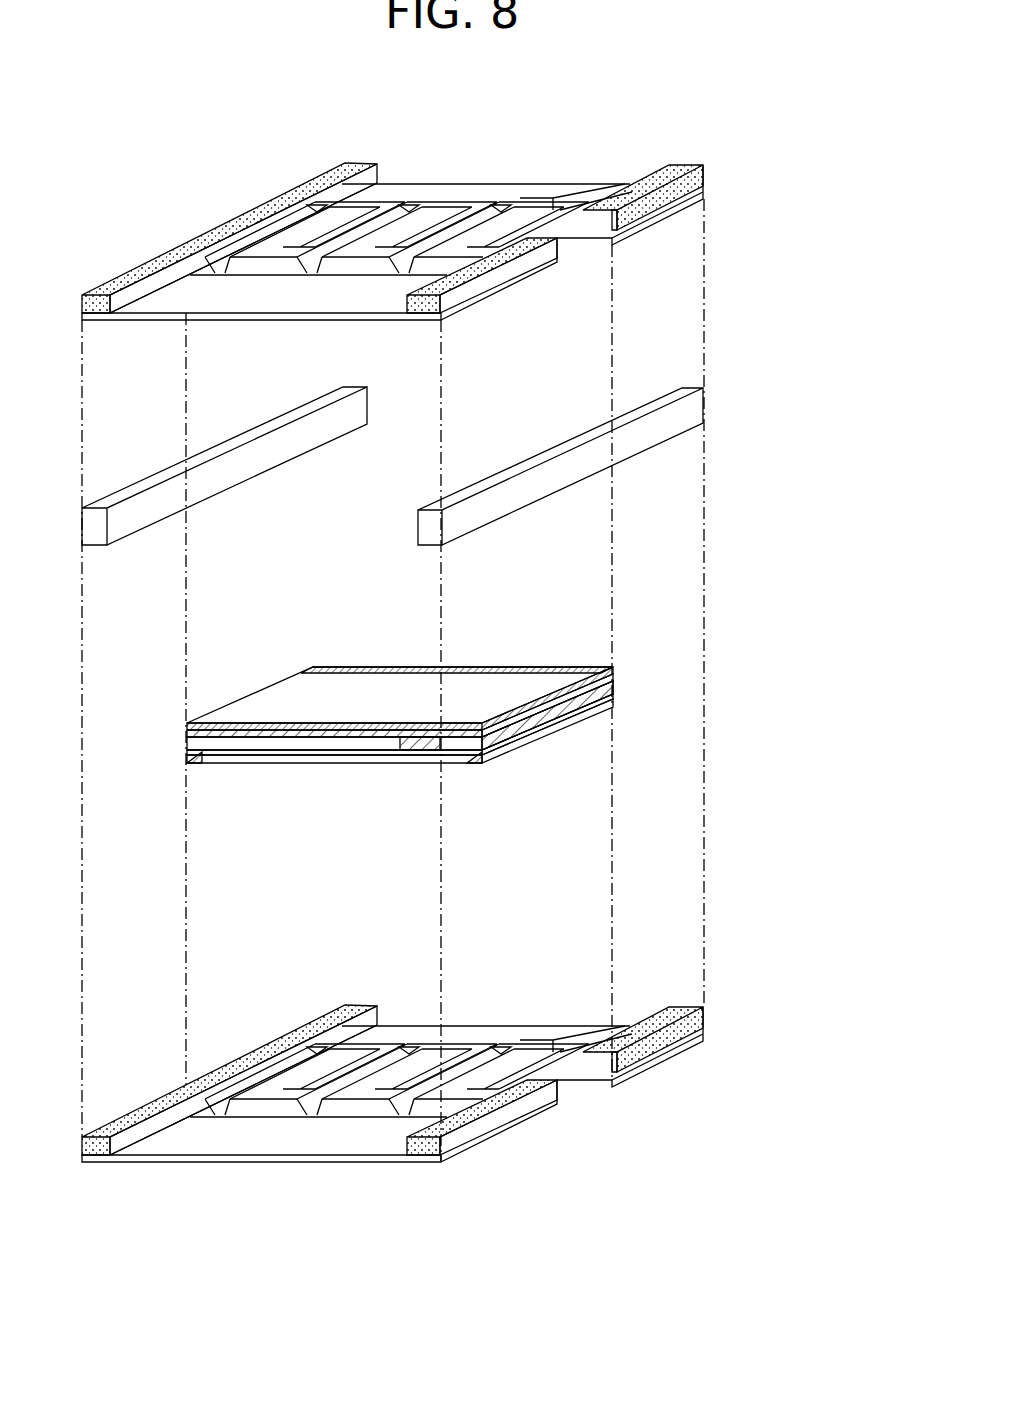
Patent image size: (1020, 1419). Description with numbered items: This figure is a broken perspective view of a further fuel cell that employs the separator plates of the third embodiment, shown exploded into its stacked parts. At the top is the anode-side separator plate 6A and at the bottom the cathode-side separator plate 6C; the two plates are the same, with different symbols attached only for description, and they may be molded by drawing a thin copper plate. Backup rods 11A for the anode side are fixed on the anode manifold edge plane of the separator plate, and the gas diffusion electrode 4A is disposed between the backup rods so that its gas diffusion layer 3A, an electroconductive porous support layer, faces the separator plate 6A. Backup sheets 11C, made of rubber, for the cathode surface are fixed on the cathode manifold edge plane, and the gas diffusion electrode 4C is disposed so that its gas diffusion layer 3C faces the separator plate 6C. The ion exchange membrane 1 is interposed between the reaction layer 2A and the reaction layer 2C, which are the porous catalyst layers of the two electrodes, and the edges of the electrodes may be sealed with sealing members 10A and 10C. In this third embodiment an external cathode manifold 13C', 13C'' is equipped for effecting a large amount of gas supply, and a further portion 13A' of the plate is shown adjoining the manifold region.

The separator plate (anode side) 6A is at (683, 163).
The backup rods for anode side 11A is at (95, 535).
The ion exchange membrane 1 is at (348, 744).
The gas diffusion electrode (anode) 4A is at (442, 714).
The gas diffusion layer (electroconductive porous support layer) 3A is at (442, 698).
The reaction layer (porous catalyst layer) 2A is at (662, 690).
The gas diffusion electrode (cathode) 4C is at (400, 784).
The gas diffusion layer (electroconductive porous support layer) 3C is at (265, 810).
The reaction layer (porous catalyst layer) 2C is at (400, 764).
The sealing member 10A is at (420, 739).
The sealing member 10C is at (538, 739).
The backup sheets for cathode surface 11C is at (125, 1117).
The separator plate (cathode side) 6C is at (500, 1130).
The external cathode manifold 13C'' is at (389, 1032).
The electrode connecting portion 13A' is at (600, 1087).
The external cathode manifold 13C' is at (310, 1186).